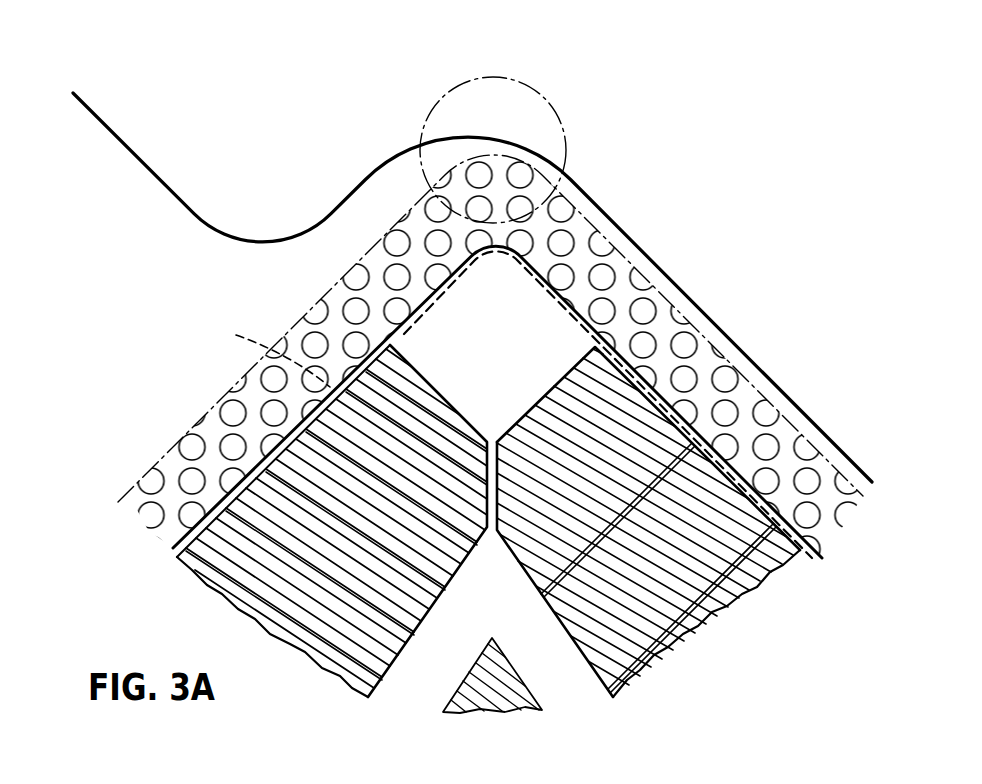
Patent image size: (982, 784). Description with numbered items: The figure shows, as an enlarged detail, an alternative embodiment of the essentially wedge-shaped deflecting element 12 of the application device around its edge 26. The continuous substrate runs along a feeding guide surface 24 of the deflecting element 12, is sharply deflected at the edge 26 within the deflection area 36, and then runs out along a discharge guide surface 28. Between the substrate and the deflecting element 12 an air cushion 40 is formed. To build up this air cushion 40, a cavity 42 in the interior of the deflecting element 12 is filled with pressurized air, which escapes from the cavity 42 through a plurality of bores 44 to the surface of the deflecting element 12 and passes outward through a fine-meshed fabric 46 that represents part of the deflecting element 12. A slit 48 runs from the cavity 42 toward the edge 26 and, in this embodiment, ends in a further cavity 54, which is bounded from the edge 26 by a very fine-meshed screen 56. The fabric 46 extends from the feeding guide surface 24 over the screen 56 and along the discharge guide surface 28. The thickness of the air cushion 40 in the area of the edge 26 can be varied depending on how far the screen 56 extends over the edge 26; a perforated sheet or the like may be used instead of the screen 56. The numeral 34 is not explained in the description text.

The deflecting element 12 is at (346, 690).
The feeding guide surface 24 is at (243, 440).
The edge 26 is at (503, 247).
The discharge guide surface 28 is at (763, 508).
The outer surface 34 is at (167, 178).
The deflection area 36 is at (445, 96).
The air cushion 40 is at (627, 292).
The cavity 42 is at (536, 630).
The bores 44 is at (700, 510).
The fine-meshed fabric 46 is at (265, 353).
The slit 48 is at (497, 500).
The cavity 54 is at (510, 392).
The screen 56 is at (537, 292).